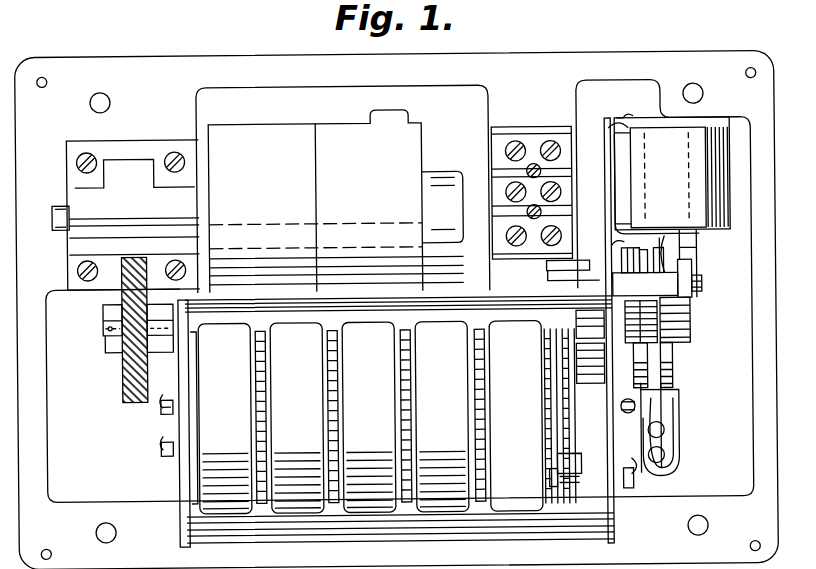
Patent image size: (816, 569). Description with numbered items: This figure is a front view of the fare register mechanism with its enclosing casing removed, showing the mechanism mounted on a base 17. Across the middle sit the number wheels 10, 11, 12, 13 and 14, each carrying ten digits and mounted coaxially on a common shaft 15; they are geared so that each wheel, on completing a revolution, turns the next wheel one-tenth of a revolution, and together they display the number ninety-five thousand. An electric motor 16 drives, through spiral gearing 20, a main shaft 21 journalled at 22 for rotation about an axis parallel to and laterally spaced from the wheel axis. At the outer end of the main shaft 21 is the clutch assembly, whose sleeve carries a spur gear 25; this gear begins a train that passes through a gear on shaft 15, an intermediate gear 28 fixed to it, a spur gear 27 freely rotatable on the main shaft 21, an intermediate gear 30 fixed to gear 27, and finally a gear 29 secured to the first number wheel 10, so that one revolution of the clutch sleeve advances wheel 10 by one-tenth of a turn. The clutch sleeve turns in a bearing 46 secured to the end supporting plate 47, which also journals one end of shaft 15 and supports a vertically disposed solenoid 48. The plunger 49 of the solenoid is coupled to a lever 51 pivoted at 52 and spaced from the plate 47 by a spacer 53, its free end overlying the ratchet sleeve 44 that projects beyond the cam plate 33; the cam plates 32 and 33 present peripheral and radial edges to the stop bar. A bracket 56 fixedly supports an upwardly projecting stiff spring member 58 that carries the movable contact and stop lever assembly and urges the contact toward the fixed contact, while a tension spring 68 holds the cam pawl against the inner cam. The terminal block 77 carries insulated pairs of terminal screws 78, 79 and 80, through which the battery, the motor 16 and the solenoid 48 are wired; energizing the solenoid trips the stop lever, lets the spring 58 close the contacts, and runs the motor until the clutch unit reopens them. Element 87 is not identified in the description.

The number wheel 10 is at (516, 403).
The number wheel 11 is at (450, 416).
The number wheel 12 is at (377, 417).
The number wheel 13 is at (304, 418).
The number wheel 14 is at (228, 418).
The common shaft 15 is at (160, 406).
The electric motor 16 is at (336, 200).
The base 17 is at (566, 40).
The spiral gearing 20 is at (122, 378).
The main shaft 21 is at (103, 325).
The journal 22 is at (165, 338).
The spur gear 25 is at (578, 358).
The spur gear 27 is at (548, 268).
The intermediate gear 28 is at (566, 462).
The gear 29 is at (556, 485).
The intermediate gear 30 is at (556, 283).
The cam plate 32 is at (665, 370).
The cam plate 33 is at (676, 380).
The ratchet sleeve 44 is at (690, 343).
The bearing 46 is at (578, 372).
The end supporting plate 47 is at (610, 287).
The solenoid 48 is at (669, 173).
The plunger 49 is at (705, 252).
The lever 51 is at (688, 278).
The pivot 52 is at (702, 287).
The spacer 53 is at (664, 240).
The bracket 56 is at (630, 475).
The spring member 58 is at (658, 413).
The tension spring 68 is at (662, 327).
The terminal block 77 is at (545, 132).
The terminal screws 78 is at (582, 236).
The terminal screws 79 is at (583, 188).
The terminal screws 80 is at (580, 134).
The contact arm 87 is at (622, 255).